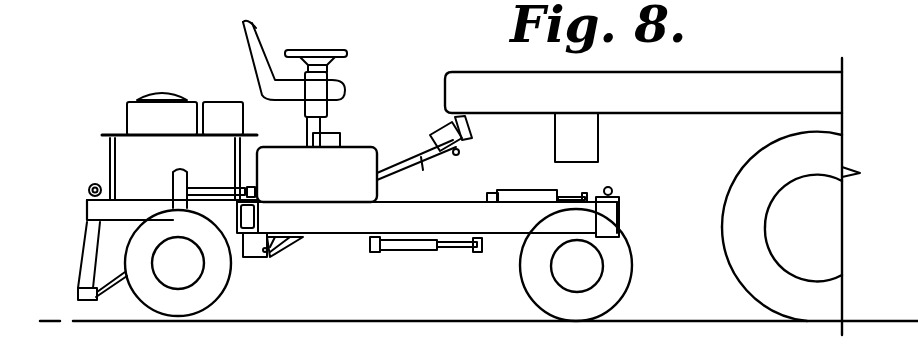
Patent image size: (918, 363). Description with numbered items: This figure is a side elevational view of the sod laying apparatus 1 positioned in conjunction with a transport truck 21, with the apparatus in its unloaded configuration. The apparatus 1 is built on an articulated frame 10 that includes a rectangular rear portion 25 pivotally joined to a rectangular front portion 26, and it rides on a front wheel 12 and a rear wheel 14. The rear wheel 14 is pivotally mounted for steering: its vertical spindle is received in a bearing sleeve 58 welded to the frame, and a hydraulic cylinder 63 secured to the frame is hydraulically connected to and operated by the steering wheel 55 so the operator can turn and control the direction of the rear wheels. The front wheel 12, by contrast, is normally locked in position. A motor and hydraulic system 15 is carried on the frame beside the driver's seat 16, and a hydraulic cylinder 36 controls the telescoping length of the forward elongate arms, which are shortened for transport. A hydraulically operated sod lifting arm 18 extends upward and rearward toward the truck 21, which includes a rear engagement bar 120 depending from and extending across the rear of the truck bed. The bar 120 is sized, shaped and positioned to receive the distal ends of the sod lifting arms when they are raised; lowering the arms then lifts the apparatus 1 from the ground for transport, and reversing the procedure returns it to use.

The sod laying apparatus 1 is at (145, 51).
The frame 10 is at (330, 225).
The front wheel 12 is at (620, 292).
The rear wheel 14 is at (142, 298).
The motor and hydraulic system 15 is at (88, 121).
The driver's seat 16 is at (240, 32).
The sod lifting arm 18 is at (423, 170).
The truck 21 is at (703, 72).
The rear portion 25 is at (287, 220).
The front portion 26 is at (87, 207).
The hydraulic cylinder 36 is at (402, 253).
The steering wheel 55 is at (327, 47).
The bearing sleeve 58 is at (168, 190).
The hydraulic cylinder 63 is at (213, 190).
The rear engagement bar 120 is at (457, 152).